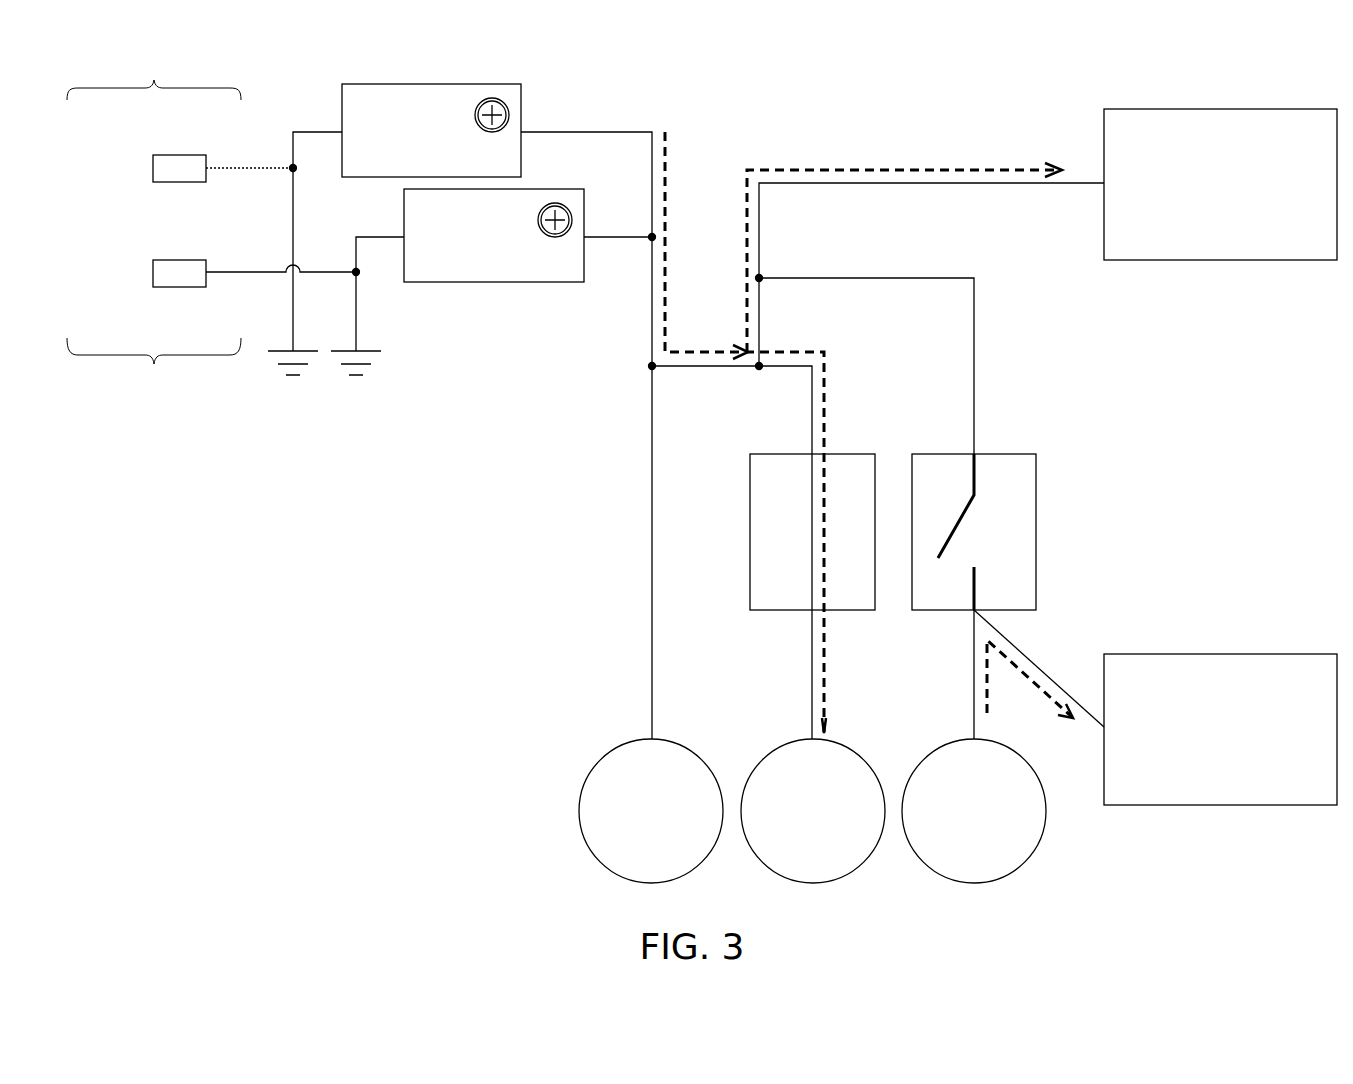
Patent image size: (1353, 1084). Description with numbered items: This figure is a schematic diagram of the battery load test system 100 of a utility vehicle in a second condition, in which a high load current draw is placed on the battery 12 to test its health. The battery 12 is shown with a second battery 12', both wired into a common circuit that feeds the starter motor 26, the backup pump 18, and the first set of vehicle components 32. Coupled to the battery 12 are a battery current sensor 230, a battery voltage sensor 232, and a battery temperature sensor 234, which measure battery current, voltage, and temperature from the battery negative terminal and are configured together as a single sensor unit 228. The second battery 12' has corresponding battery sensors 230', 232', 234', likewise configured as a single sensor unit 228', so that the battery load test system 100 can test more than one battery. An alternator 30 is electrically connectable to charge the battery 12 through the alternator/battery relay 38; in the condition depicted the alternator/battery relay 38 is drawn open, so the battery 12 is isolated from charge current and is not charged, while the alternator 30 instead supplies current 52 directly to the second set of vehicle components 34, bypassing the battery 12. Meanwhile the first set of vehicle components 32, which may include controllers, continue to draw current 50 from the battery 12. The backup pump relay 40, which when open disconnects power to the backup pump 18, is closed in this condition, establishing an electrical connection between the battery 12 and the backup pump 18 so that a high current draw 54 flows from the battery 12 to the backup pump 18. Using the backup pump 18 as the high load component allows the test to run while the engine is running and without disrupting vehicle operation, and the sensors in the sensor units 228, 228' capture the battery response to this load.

The battery load test system 100 is at (325, 592).
The battery 12 is at (463, 110).
The second battery 12' is at (494, 268).
The backup pump 18 is at (838, 742).
The starter motor 26 is at (581, 783).
The alternator 30 is at (1040, 835).
The first set of vehicle components 32 is at (1155, 109).
The second set of vehicle components 34 is at (1190, 654).
The alternator/battery relay 38 is at (1010, 454).
The backup pump relay 40 is at (850, 454).
The current 50 is at (848, 168).
The current 52 is at (1014, 670).
The high current draw 54 is at (818, 350).
The single sensor unit 228 is at (154, 70).
The single sensor unit 228' is at (154, 370).
The battery current sensor 230 is at (156, 144).
The battery voltage sensor 232 is at (156, 144).
The battery temperature sensor 234 is at (156, 144).
The battery current sensor 230' is at (157, 301).
The battery voltage sensor 232' is at (157, 301).
The battery temperature sensor 234' is at (157, 301).